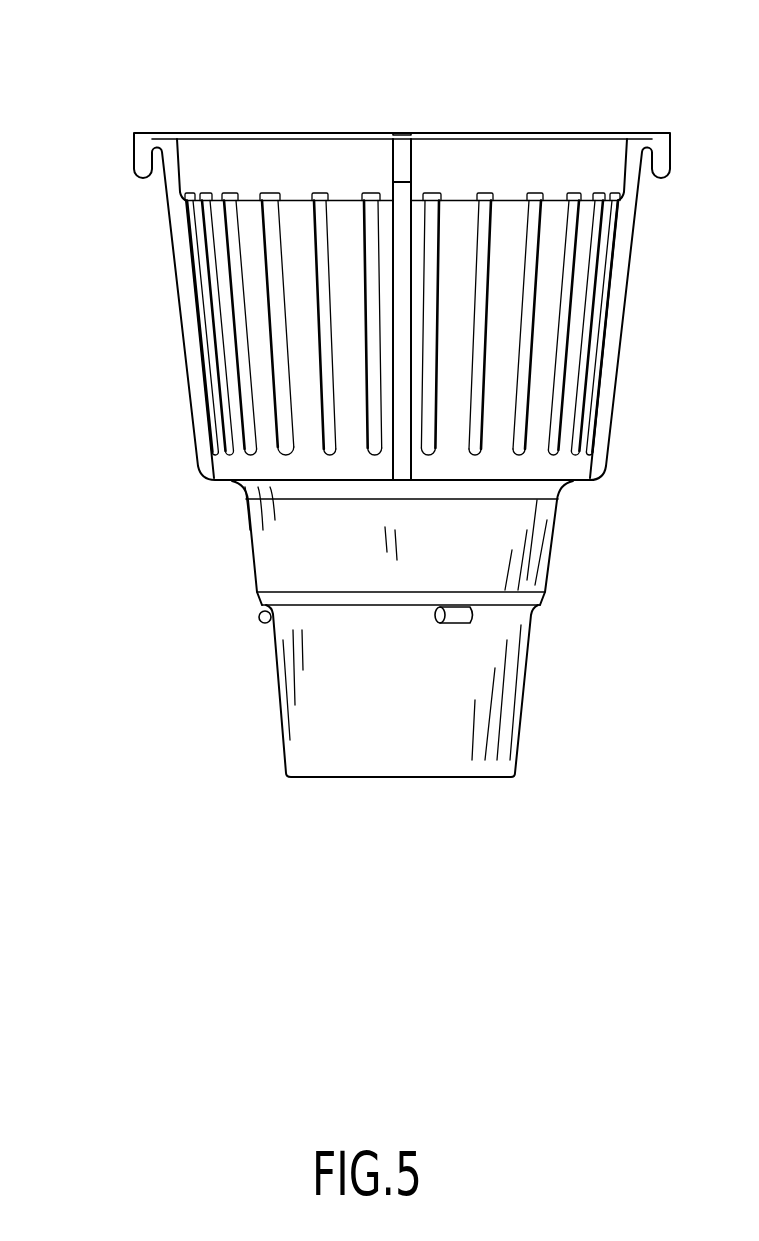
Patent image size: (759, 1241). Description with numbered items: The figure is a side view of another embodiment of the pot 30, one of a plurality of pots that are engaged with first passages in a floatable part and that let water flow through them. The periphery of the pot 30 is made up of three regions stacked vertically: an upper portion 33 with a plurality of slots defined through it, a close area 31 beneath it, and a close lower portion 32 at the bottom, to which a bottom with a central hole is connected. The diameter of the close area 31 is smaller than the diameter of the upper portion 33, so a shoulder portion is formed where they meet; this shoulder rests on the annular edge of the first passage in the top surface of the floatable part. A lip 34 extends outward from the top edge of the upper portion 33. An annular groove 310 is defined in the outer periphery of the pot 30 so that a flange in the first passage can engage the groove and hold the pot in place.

The pot 30 is at (93, 108).
The lip 34 is at (137, 160).
The upper portion 33 is at (248, 332).
The close area 31 is at (258, 540).
The close lower portion 32 is at (302, 633).
The annular groove 310 is at (455, 601).